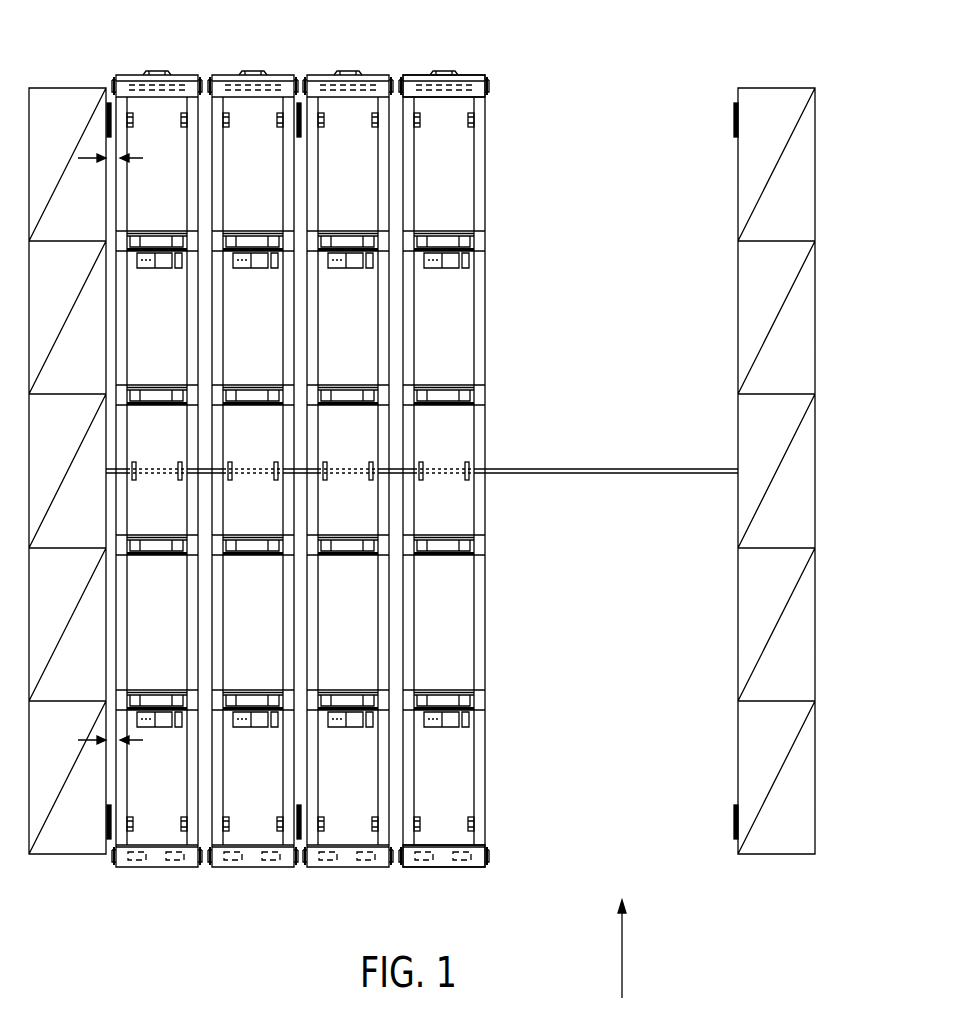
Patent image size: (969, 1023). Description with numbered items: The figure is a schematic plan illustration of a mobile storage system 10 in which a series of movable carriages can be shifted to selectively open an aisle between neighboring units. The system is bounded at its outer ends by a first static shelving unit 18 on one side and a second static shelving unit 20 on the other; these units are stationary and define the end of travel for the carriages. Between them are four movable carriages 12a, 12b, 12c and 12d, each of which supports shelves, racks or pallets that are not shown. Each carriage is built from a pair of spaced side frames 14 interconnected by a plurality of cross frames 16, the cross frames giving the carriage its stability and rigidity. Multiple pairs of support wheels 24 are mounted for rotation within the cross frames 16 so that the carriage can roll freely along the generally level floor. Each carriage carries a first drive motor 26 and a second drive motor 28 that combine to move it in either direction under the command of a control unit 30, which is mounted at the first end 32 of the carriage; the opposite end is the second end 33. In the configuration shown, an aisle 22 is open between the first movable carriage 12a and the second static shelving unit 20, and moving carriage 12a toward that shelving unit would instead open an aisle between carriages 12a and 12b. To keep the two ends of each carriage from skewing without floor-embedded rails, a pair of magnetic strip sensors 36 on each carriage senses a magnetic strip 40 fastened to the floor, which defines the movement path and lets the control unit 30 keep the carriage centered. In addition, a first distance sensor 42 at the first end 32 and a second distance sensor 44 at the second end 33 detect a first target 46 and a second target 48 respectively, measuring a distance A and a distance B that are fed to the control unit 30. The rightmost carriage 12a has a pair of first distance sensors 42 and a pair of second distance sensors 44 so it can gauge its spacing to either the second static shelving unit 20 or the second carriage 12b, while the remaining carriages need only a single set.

The mobile storage system 10 is at (483, 924).
The first movable carriage 12a is at (485, 115).
The second movable carriage 12b is at (388, 175).
The third movable carriage 12c is at (293, 175).
The fourth movable carriage 12d is at (197, 168).
The side frame 14 is at (486, 312).
The cross frame 16 is at (485, 232).
The first static shelving unit 18 is at (68, 100).
The second static shelving unit 20 is at (777, 97).
The aisle 22 is at (622, 955).
The support wheels 24 is at (366, 387).
The first drive motor 26 is at (456, 268).
The second drive motor 28 is at (450, 727).
The control unit 30 is at (154, 71).
The first end 32 is at (470, 78).
The second end 33 is at (445, 870).
The magnetic strip sensor 36 is at (465, 460).
The magnetic strip 40 is at (612, 468).
The first distance sensor 42 is at (134, 120).
The second distance sensor 44 is at (135, 823).
The first target 46 is at (107, 120).
The second target 48 is at (111, 825).
The distance A is at (143, 158).
The distance B is at (143, 740).